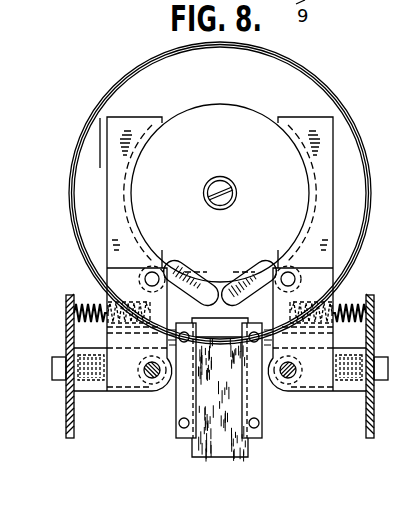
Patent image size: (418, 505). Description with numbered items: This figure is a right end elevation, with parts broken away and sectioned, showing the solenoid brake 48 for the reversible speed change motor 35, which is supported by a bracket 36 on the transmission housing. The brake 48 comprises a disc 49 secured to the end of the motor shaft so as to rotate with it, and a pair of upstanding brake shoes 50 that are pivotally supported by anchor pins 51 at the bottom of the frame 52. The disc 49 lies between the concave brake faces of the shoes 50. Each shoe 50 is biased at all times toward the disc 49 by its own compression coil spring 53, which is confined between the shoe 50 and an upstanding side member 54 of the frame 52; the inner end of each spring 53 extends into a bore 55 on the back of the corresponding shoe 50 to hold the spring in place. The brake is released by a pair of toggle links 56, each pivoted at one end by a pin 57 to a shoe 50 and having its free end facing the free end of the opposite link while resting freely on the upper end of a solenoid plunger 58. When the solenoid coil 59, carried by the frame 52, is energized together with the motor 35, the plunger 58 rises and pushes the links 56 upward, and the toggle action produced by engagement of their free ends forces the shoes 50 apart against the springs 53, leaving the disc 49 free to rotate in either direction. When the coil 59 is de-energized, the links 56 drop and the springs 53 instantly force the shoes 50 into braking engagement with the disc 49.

The reversible speed change motor 35 is at (318, 84).
The bracket 36 is at (353, 348).
The solenoid brake 48 is at (97, 166).
The disc 49 is at (224, 118).
The brake shoes 50 is at (118, 135).
The anchor pins 51 is at (152, 378).
The frame 52 is at (67, 383).
The compression coil springs 53 is at (88, 300).
The upstanding side member 54 is at (67, 300).
The bore 55 is at (127, 302).
The toggle links 56 is at (243, 293).
The pin 57 is at (157, 270).
The solenoid plunger 58 is at (218, 450).
The solenoid coil 59 is at (175, 413).